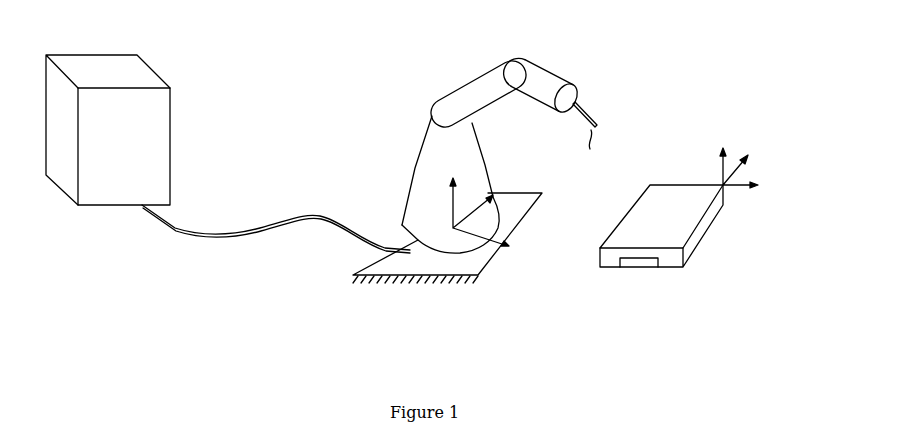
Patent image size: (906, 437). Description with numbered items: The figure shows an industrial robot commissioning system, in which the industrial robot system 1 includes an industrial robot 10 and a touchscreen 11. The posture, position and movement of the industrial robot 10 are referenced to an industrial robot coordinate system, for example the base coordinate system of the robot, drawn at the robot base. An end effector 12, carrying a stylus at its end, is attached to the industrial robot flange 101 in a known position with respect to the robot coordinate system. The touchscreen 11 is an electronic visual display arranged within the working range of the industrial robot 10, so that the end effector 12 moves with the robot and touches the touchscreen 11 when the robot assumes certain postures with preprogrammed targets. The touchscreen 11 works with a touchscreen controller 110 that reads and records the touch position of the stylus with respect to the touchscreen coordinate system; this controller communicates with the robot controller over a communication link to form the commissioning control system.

The industrial robot system 1 is at (672, 332).
The touchscreen controller 110 is at (99, 66).
The industrial robot 10 is at (434, 143).
The industrial robot flange 101 is at (574, 100).
The end effector 12 is at (586, 112).
The touchscreen 11 is at (687, 218).